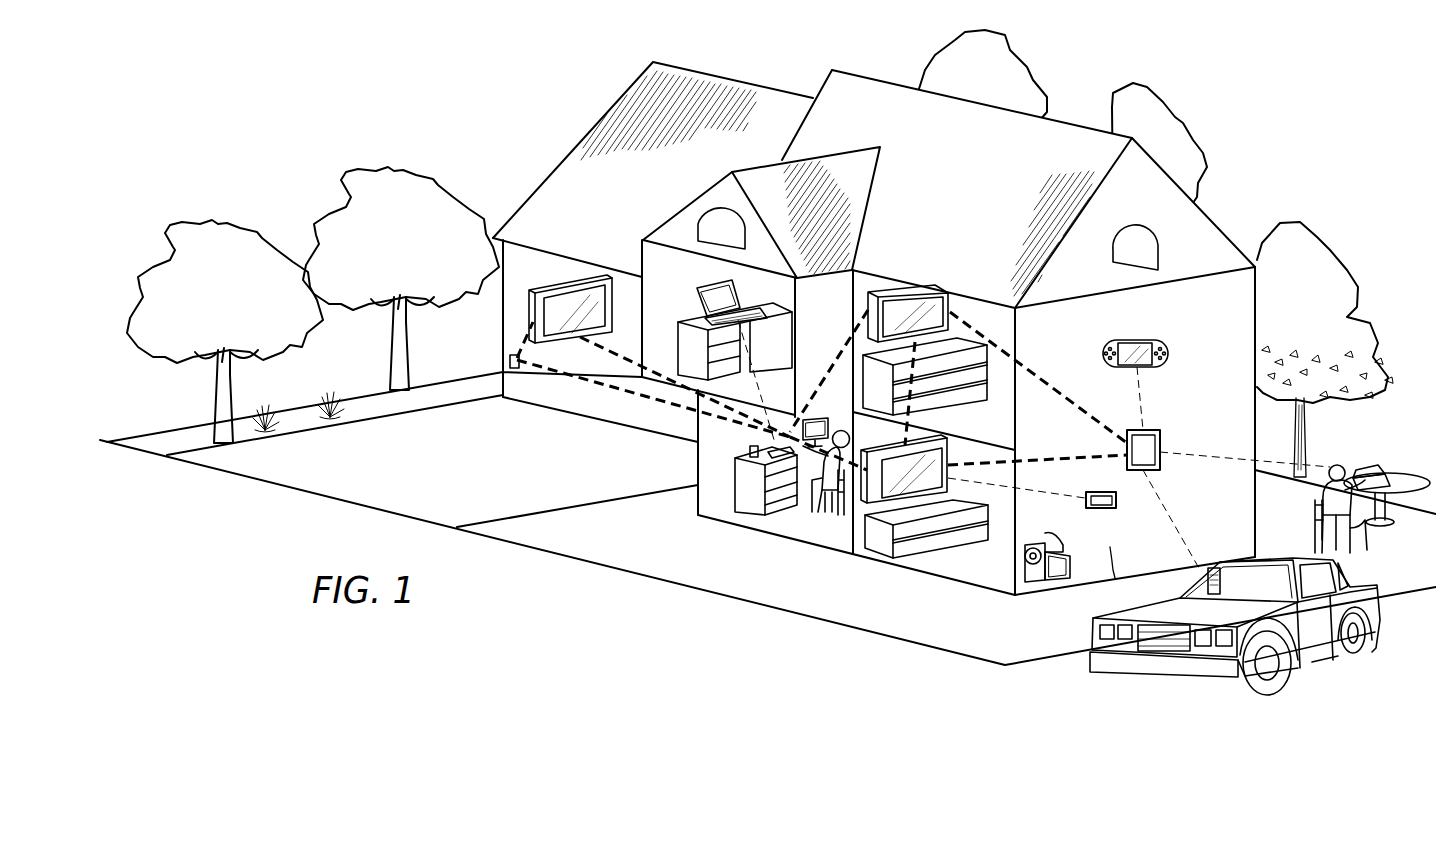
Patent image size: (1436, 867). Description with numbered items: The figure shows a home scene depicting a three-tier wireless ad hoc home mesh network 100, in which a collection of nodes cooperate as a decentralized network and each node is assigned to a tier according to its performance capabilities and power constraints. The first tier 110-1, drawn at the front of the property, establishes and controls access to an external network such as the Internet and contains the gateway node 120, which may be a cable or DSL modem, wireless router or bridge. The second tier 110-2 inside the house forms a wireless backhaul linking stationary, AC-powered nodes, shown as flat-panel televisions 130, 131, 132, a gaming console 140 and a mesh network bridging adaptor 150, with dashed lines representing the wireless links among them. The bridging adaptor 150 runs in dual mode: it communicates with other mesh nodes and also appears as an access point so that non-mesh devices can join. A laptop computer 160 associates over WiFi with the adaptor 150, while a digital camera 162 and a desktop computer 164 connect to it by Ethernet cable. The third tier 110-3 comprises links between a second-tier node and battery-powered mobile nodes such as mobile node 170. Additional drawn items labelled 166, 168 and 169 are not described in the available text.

The multi-tier wireless home mesh network 100 is at (1270, 112).
The first tier 110-1 is at (447, 383).
The second tier 110-2 is at (713, 463).
The third tier 110-3 is at (1115, 578).
The gateway node 120 is at (510, 362).
The flat-panel television 130 is at (560, 290).
The flat-panel television 131 is at (880, 290).
The flat-panel television 132 is at (865, 498).
The gaming console 140 is at (1157, 432).
The mesh network bridging adaptor 150 is at (783, 445).
The laptop computer 160 is at (698, 310).
The digital camera 162 is at (750, 460).
The desktop computer 164 is at (1148, 342).
The remote user with laptop 166 is at (1377, 470).
The vehicle mobile device 168 is at (1227, 560).
The set-top device 169 is at (1107, 491).
The mobile node 170 is at (620, 392).